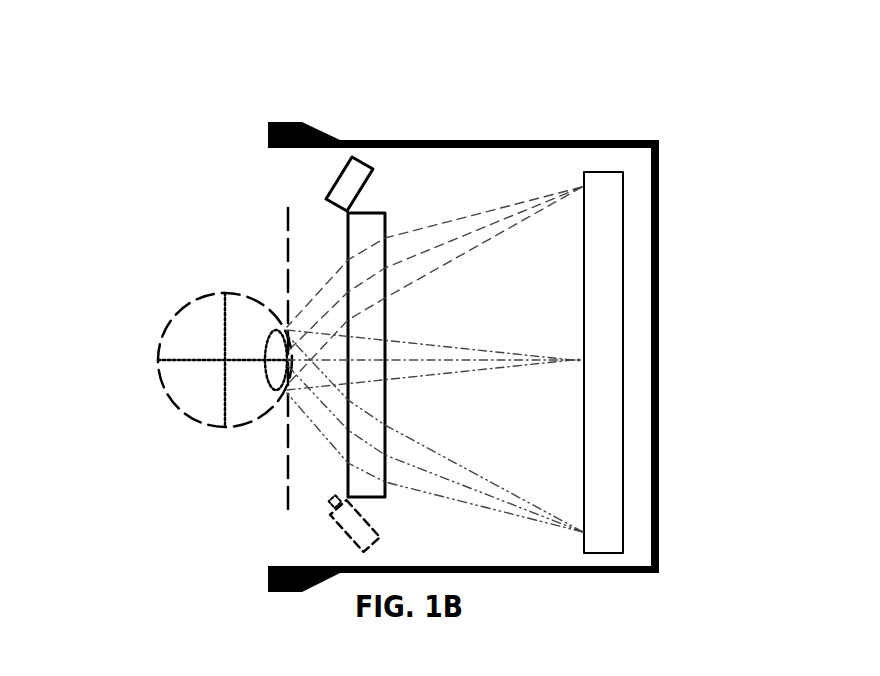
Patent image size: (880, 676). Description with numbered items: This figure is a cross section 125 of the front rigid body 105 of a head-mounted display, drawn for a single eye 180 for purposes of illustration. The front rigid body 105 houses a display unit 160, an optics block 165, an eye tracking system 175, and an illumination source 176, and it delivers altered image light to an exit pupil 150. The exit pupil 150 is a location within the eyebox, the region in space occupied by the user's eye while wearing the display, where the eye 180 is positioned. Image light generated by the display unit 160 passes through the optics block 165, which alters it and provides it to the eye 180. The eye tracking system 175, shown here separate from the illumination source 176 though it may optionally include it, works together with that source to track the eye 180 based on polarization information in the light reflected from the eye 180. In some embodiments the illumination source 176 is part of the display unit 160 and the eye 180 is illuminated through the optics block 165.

The cross section 125 is at (55, 41).
The front rigid body 105 is at (613, 141).
The eye tracking system 175 is at (372, 168).
The optics block 165 is at (348, 236).
The display unit 160 is at (622, 226).
The eye 180 is at (160, 341).
The exit pupil 150 is at (285, 452).
The illumination source 176 is at (343, 527).